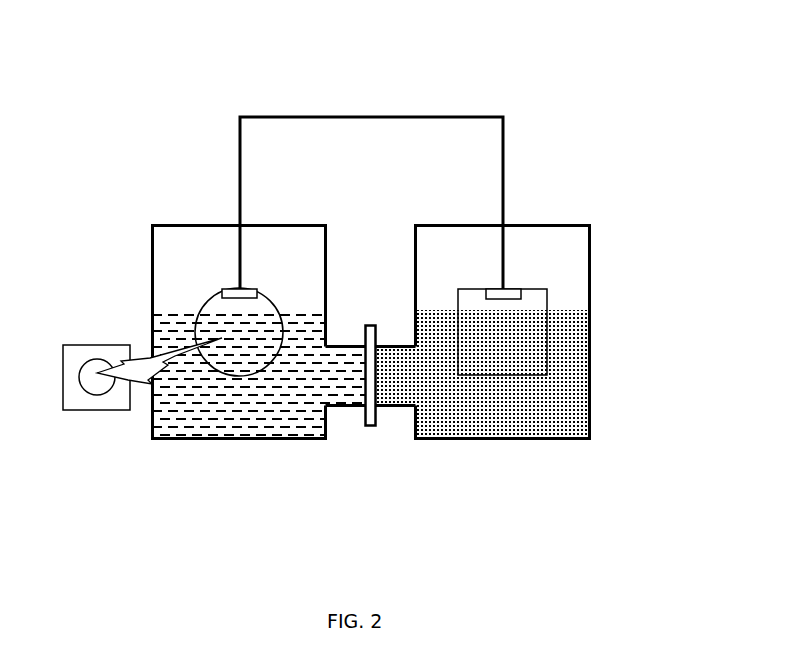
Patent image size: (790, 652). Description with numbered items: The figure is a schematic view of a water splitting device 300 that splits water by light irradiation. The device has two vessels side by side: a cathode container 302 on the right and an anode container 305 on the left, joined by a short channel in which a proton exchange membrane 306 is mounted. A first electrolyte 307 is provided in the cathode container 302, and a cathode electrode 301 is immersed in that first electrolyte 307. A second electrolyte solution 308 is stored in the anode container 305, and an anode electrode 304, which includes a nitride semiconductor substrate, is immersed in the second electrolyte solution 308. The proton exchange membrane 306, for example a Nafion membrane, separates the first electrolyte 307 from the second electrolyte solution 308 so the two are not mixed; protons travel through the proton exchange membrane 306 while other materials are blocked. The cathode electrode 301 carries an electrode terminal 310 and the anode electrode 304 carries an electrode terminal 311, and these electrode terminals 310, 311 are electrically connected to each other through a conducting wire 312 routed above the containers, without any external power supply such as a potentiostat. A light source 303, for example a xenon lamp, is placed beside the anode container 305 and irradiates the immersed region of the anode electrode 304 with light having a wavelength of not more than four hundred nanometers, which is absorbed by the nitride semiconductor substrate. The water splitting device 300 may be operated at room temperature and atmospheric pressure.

The water splitting device 300 is at (510, 68).
The cathode electrode 301 is at (490, 362).
The cathode container 302 is at (590, 278).
The light source 303 is at (82, 397).
The anode electrode 304 is at (233, 367).
The anode container 305 is at (152, 238).
The proton exchange membrane 306 is at (368, 417).
The first electrolyte 307 is at (570, 420).
The second electrolyte solution 308 is at (165, 325).
The electrode terminal 310 is at (514, 293).
The electrode terminal 311 is at (228, 292).
The conducting wire 312 is at (419, 115).